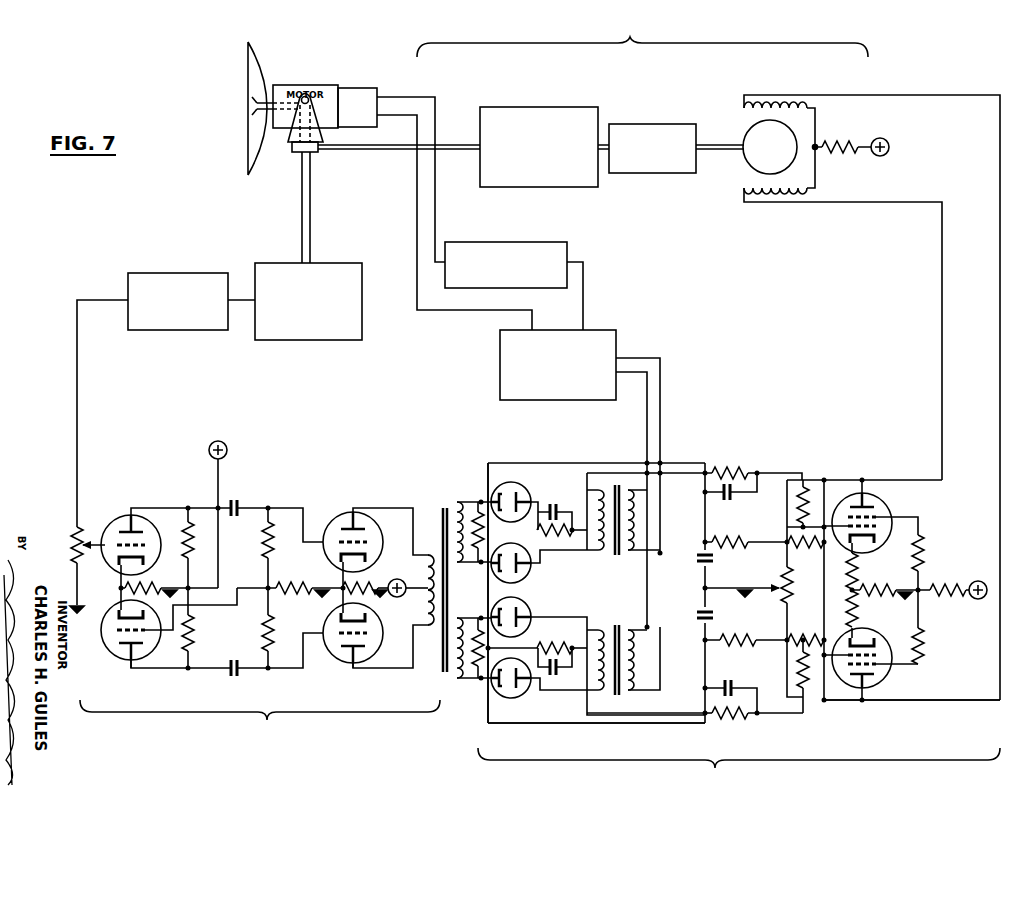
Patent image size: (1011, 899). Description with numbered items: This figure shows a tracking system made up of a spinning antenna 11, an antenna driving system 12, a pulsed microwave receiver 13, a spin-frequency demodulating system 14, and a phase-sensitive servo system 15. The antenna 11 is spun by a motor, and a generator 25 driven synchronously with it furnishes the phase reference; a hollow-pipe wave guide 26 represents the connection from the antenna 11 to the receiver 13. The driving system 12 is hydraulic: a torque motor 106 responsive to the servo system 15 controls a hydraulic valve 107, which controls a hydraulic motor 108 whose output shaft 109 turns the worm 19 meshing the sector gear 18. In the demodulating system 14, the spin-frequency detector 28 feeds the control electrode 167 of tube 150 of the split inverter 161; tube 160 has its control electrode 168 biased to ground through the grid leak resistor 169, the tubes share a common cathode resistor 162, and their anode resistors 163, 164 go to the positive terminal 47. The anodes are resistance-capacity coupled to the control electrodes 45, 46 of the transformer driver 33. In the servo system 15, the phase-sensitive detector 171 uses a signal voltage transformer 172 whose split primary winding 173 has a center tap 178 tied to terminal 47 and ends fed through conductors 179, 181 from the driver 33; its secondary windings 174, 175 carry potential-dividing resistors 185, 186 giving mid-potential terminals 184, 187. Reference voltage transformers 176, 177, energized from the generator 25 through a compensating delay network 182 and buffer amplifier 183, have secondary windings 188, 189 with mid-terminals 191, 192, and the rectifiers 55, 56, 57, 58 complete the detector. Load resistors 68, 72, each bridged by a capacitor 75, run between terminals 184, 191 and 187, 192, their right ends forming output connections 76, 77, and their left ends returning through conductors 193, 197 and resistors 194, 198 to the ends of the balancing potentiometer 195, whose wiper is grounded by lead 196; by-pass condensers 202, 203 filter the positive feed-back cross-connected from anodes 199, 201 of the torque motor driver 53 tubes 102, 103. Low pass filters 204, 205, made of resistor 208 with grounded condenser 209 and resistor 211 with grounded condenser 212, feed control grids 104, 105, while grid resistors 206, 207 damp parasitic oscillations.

The antenna 11 is at (272, 74).
The generator 25 is at (360, 88).
The sector gear 18 is at (320, 137).
The worm 19 is at (313, 152).
The output shaft 109 is at (350, 150).
The hollow-pipe wave guide 26 is at (311, 205).
The pulsed microwave receiver 13 is at (358, 263).
The spin-frequency detector 28 is at (183, 330).
The antenna driving system 12 is at (638, 31).
The hydraulic motor 108 is at (532, 107).
The hydraulic valve 107 is at (648, 124).
The torque motor 106 is at (768, 92).
The compensating delay network 182 is at (568, 250).
The buffer amplifier 183 is at (616, 332).
The positive terminal 47 is at (226, 455).
The control electrode 167 is at (113, 538).
The tube 150 is at (156, 522).
The anode resistor 163 is at (190, 521).
The anode resistor 164 is at (192, 640).
The common cathode resistor 162 is at (143, 588).
The tube 160 is at (104, 653).
The control electrode 168 is at (148, 640).
The split inverter 161 is at (119, 668).
The grid leak resistor 169 is at (285, 585).
The control electrode 45 is at (330, 530).
The control electrode 46 is at (381, 640).
The transformer driver 33 is at (341, 669).
The conductor 179 is at (404, 508).
The conductor 181 is at (404, 670).
The center tap 178 is at (431, 555).
The split primary winding 173 is at (425, 600).
The signal voltage transformer 172 is at (446, 510).
The spin-frequency demodulating system 14 is at (260, 721).
The secondary winding 174 is at (462, 503).
The resistor 185 is at (463, 561).
The mid-potential terminal 184 is at (478, 558).
The secondary winding 175 is at (462, 682).
The potential-dividing resistor 186 is at (481, 619).
The mid-potential terminal 187 is at (456, 648).
The rectifier 55 is at (505, 484).
The rectifier 56 is at (527, 580).
The rectifier 57 is at (525, 603).
The rectifier 58 is at (512, 698).
The capacitor 75 is at (556, 505).
The load resistor 68 is at (548, 540).
The load resistor 72 is at (552, 644).
The mid-terminal 191 is at (598, 500).
The secondary winding 188 is at (610, 552).
The reference voltage transformer 176 is at (632, 552).
The secondary winding 189 is at (598, 630).
The mid-terminal 192 is at (610, 685).
The reference voltage transformer 177 is at (632, 630).
The conductor 193 is at (670, 464).
The phase-sensitive detector 171 is at (500, 724).
The conductor 197 is at (668, 725).
The output connection 77 is at (660, 714).
The output connection 76 is at (665, 490).
The by-pass condenser 202 is at (695, 558).
The by-pass condenser 203 is at (698, 615).
The resistor 208 is at (728, 470).
The low pass filter 204 is at (766, 467).
The grounded condenser 209 is at (725, 500).
The resistor 194 is at (727, 549).
The ground lead 196 is at (742, 581).
The balancing potentiometer 195 is at (791, 588).
The grid resistor 206 is at (787, 527).
The resistor 198 is at (742, 640).
The grid resistor 207 is at (797, 672).
The grounded condenser 212 is at (728, 680).
The resistor 211 is at (725, 720).
The low pass filter 205 is at (750, 719).
The phase-sensitive servo system 15 is at (739, 769).
The torque motor controller tube 102 is at (888, 503).
The anode 199 is at (865, 490).
The control grid 104 is at (881, 550).
The control grid 105 is at (880, 640).
The torque motor controller tube 103 is at (893, 678).
The anode 201 is at (867, 700).
The torque motor driver 53 is at (842, 722).